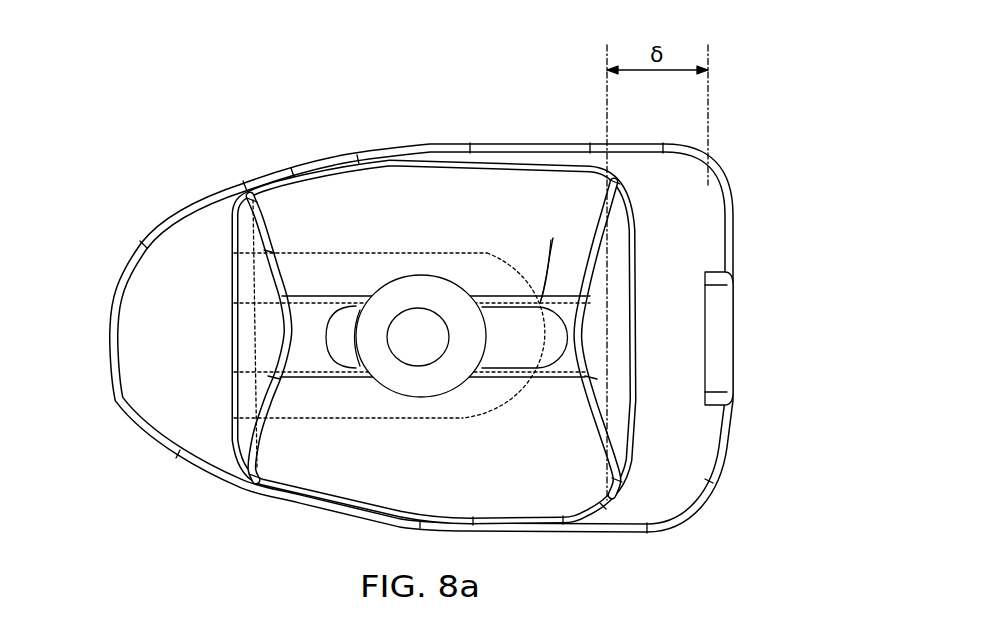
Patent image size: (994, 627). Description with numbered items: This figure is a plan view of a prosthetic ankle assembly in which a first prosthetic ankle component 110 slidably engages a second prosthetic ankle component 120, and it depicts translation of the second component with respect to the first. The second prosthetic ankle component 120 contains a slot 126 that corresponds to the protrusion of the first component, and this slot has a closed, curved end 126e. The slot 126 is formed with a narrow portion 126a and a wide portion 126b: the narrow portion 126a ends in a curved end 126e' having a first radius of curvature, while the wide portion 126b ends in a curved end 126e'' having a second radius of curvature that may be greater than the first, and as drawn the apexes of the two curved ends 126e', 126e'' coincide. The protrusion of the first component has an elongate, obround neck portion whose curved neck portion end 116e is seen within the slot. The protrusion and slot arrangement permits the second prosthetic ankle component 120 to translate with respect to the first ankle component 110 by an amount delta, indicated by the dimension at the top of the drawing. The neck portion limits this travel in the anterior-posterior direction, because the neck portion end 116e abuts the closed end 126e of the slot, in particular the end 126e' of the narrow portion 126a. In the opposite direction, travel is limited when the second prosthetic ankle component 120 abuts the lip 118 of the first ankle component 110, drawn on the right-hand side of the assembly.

The first prosthetic ankle component 110 is at (160, 380).
The second prosthetic ankle component 120 is at (300, 470).
The slot 126 is at (353, 330).
The narrow portion 126a is at (265, 225).
The wide portion 126b is at (297, 253).
The curved end 126e is at (690, 337).
The curved end of the narrow portion 126e' is at (562, 264).
The curved end of the wide portion 126e'' is at (520, 357).
The neck portion end 116e is at (567, 333).
The lip 118 is at (720, 337).